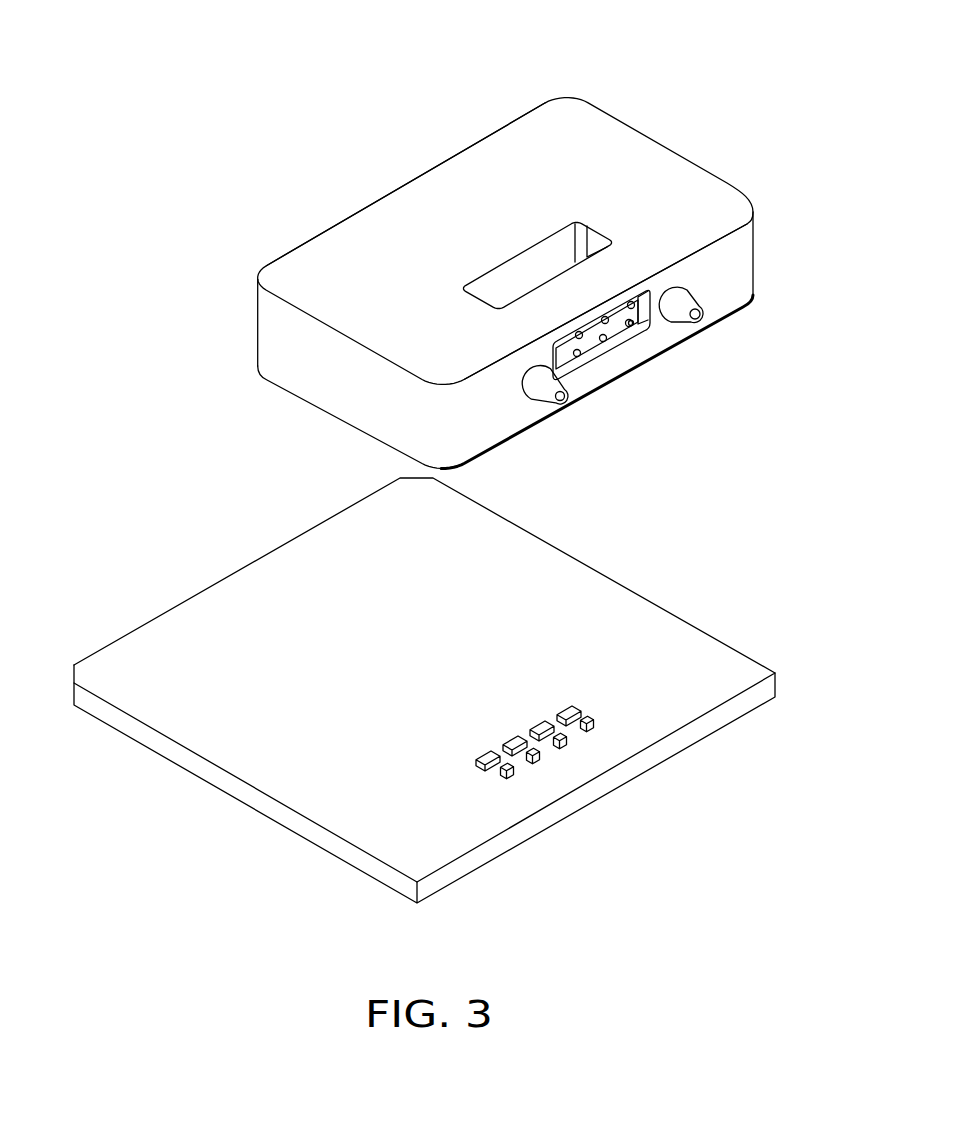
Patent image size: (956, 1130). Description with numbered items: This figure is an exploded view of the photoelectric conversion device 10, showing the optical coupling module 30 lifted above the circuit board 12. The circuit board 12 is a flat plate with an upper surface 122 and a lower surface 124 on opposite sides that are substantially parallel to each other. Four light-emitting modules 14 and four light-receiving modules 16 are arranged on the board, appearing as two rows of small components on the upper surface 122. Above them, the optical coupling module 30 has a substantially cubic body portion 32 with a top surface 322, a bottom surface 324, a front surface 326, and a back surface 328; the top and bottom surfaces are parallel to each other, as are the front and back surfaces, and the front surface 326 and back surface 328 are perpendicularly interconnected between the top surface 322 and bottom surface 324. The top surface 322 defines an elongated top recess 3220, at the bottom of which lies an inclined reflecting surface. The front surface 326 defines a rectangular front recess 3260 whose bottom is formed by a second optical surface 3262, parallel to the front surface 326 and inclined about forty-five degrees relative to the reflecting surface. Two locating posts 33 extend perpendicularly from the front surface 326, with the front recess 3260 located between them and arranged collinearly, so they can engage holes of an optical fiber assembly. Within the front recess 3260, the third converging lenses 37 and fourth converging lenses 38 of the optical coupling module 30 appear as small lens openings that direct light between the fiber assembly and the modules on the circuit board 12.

The photoelectric conversion device 10 is at (405, 31).
The circuit board 12 is at (99, 787).
The upper surface 122 is at (172, 710).
The lower surface 124 is at (195, 780).
The light-emitting modules 14 is at (485, 767).
The light-receiving modules 16 is at (510, 776).
The optical coupling module 30 is at (305, 226).
The body portion 32 is at (265, 318).
The top surface 322 is at (647, 155).
The top recess 3220 is at (550, 255).
The bottom surface 324 is at (744, 318).
The front surface 326 is at (737, 253).
The front recess 3260 is at (573, 378).
The second optical surface 3262 is at (588, 345).
The back surface 328 is at (405, 182).
The locating posts 33 is at (537, 394).
The third converging lenses 37 is at (630, 327).
The fourth converging lenses 38 is at (634, 323).